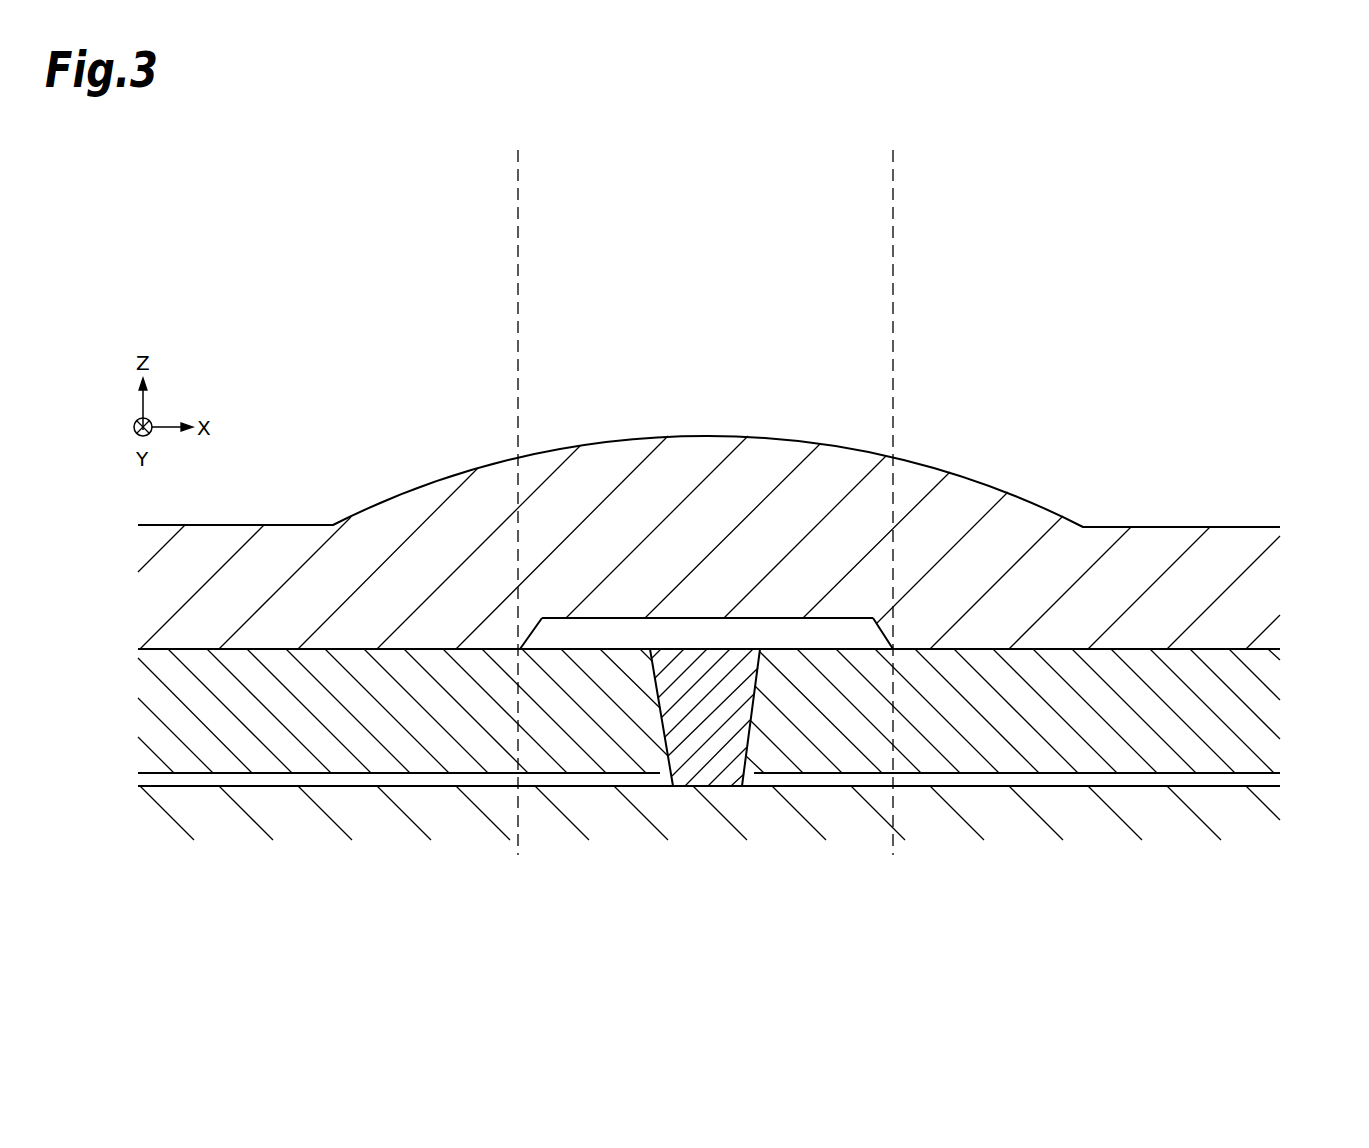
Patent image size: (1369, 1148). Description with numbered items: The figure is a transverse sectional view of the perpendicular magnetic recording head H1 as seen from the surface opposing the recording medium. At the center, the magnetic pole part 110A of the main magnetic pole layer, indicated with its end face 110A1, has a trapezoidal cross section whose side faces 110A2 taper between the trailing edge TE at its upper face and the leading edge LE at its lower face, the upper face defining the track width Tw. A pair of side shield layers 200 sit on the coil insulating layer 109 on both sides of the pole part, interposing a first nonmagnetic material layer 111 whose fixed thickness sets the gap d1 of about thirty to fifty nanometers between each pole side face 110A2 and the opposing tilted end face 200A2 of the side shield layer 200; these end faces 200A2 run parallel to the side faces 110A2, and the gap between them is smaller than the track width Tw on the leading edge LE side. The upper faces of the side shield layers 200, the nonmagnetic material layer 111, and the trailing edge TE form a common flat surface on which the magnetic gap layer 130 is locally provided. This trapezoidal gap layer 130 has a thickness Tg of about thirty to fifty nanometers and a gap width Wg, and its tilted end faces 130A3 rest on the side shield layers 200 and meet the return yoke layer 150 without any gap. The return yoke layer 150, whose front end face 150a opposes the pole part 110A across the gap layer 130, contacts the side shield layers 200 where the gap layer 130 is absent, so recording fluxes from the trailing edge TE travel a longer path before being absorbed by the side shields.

The return yoke layer 150 is at (709, 499).
The front end face 150a is at (1024, 530).
The magnetic gap layer 130 is at (802, 648).
The end faces 130A3 is at (884, 604).
The side shield layers 200 is at (1313, 723).
The end faces 200A2 is at (765, 742).
The first nonmagnetic material layer 111 is at (1313, 790).
The coil insulating layer 109 is at (1217, 808).
The magnetic pole part 110A is at (718, 796).
The main pole end face 110A1 is at (707, 788).
The side faces 110A2 is at (771, 650).
The trailing edge TE is at (673, 650).
The leading edge LE is at (707, 750).
The track width Tw is at (762, 865).
The gap width Wg is at (518, 581).
The thickness Tg is at (895, 598).
The gap d1 is at (817, 740).
The perpendicular magnetic recording head H1 is at (266, 337).